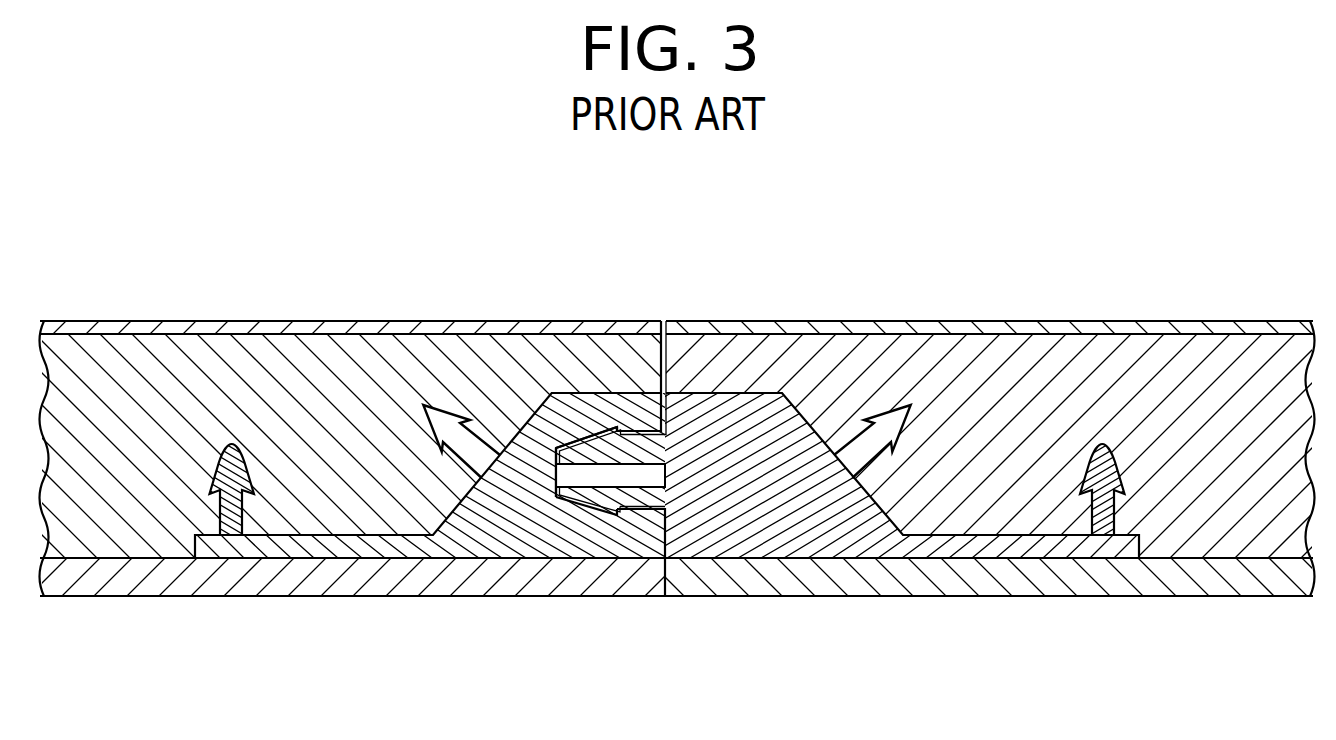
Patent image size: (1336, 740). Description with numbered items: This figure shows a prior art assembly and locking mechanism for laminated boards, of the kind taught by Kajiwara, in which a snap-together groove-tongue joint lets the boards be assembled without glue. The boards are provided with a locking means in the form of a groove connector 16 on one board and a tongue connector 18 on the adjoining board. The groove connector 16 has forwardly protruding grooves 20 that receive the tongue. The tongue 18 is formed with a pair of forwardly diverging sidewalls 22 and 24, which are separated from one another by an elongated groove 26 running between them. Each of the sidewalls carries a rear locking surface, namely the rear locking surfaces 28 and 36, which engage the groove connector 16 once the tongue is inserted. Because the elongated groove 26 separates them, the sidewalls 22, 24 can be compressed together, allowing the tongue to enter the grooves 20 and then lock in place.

The groove connector 16 is at (482, 532).
The tongue connector 18 is at (600, 448).
The forwardly protruding grooves 20 is at (555, 500).
The forwardly diverging sidewall 22 is at (578, 441).
The forwardly diverging sidewall 24 is at (594, 509).
The elongated groove 26 is at (578, 477).
The rear locking surface 28 is at (630, 428).
The rear locking surface 36 is at (603, 520).